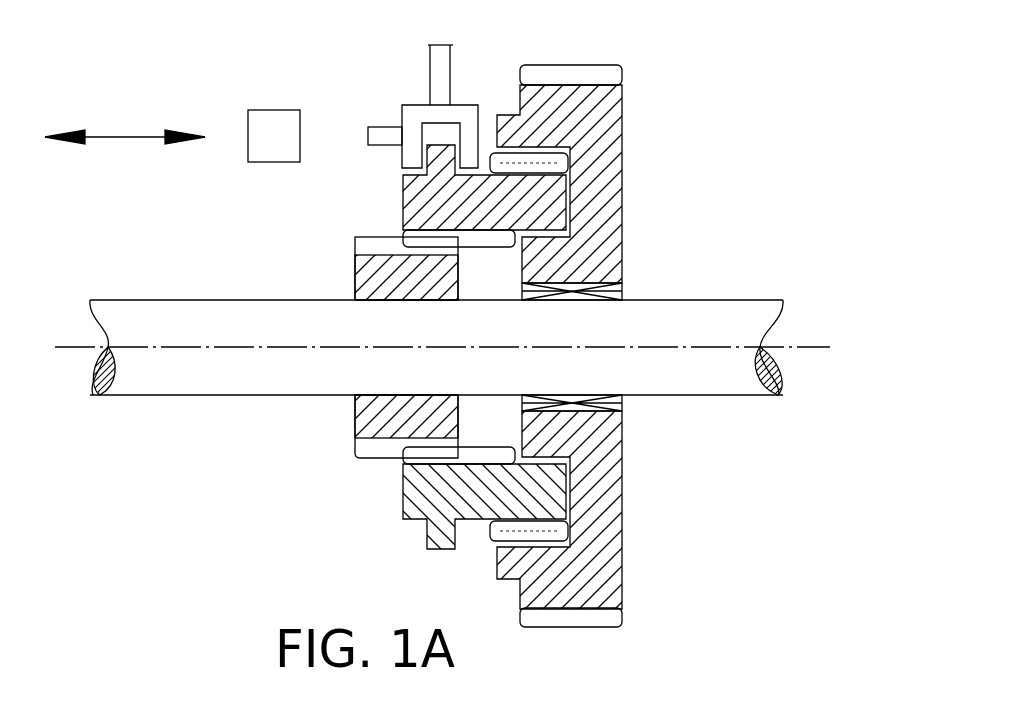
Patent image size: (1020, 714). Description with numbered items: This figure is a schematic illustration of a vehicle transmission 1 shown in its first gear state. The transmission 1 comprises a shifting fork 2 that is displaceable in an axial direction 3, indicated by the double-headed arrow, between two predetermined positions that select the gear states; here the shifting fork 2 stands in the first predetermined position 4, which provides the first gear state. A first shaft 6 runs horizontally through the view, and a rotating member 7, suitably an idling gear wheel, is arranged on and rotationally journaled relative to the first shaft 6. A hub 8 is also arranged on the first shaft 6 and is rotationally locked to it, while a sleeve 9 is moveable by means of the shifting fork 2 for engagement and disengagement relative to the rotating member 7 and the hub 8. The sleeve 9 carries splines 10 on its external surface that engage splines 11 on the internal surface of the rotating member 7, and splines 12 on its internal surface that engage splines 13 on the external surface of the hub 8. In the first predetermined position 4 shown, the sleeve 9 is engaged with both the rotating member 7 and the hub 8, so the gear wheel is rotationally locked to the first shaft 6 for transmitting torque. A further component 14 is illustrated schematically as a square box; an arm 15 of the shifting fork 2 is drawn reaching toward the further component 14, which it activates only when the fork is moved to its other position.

The vehicle transmission 1 is at (668, 50).
The shifting fork 2 is at (437, 76).
The axial direction 3 is at (125, 137).
The first predetermined position 4 is at (480, 65).
The first shaft 6 is at (166, 327).
The rotating member 7 is at (597, 233).
The hub 8 is at (388, 418).
The sleeve 9 is at (540, 206).
The splines 10 is at (562, 178).
The splines 11 is at (575, 158).
The splines 12 is at (528, 247).
The splines 13 is at (372, 247).
The further component 14 is at (270, 138).
The arm 15 is at (383, 137).